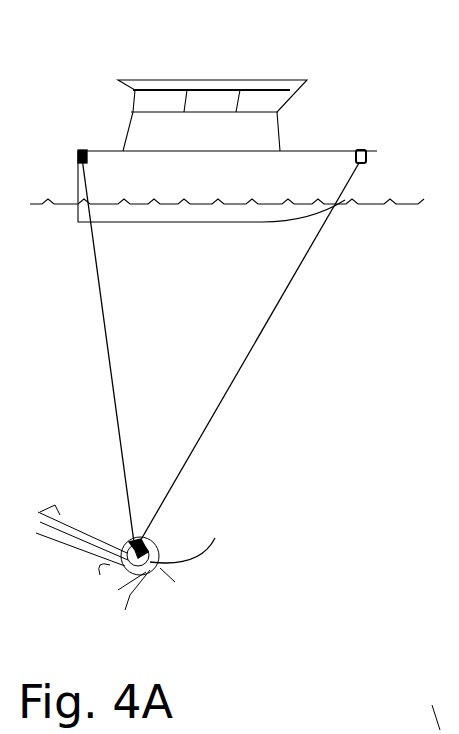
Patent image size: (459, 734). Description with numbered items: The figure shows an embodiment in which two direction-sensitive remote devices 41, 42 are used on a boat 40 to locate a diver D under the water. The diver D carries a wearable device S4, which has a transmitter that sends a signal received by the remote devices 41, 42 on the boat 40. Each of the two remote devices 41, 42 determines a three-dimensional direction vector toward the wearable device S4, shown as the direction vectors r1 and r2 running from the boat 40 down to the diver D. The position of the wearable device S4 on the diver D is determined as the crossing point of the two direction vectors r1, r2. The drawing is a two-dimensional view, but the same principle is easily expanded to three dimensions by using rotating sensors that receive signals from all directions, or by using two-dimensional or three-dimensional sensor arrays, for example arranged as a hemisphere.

The boat 40 is at (215, 78).
The direction-sensitive remote device 41 is at (86, 150).
The direction-sensitive remote device 42 is at (362, 150).
The three-dimensional direction vector r1 is at (98, 354).
The three-dimensional direction vector r2 is at (247, 356).
The diver D is at (98, 567).
The wearable device S4 is at (194, 532).